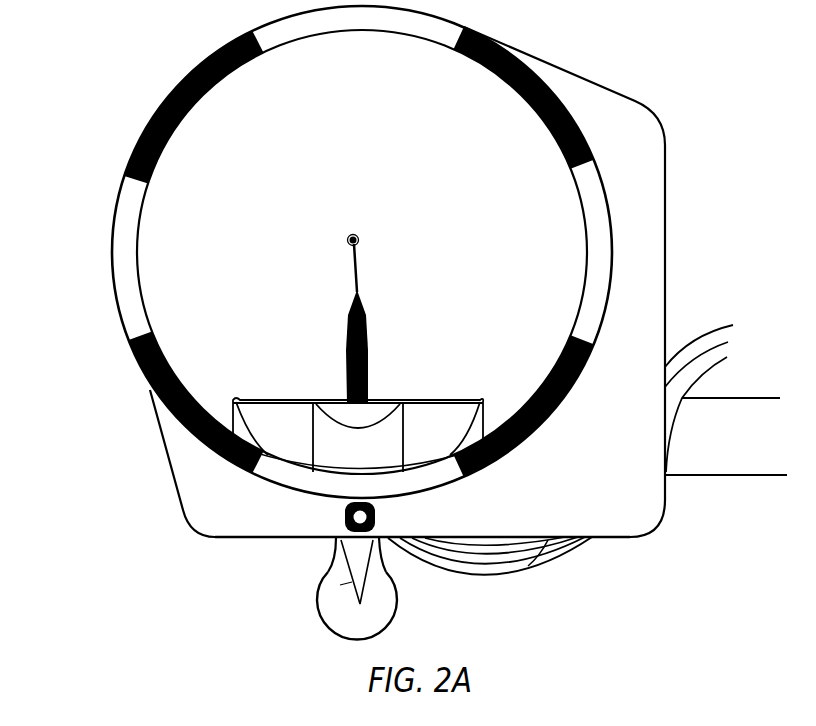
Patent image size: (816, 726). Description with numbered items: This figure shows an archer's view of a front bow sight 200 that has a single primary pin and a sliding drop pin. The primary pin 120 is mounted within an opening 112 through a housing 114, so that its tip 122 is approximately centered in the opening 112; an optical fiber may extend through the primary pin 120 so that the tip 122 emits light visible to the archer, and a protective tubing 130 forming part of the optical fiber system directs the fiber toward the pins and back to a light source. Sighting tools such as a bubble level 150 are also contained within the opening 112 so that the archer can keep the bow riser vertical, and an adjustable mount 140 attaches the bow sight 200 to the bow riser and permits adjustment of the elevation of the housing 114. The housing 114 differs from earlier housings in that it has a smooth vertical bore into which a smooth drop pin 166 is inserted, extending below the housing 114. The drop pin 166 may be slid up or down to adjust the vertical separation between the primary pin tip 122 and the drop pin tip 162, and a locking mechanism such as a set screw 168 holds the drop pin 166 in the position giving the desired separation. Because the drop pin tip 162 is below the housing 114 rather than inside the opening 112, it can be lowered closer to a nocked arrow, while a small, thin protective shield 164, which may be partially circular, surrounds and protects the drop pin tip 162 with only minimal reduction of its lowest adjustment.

The front bow sight 200 is at (140, 48).
The opening 112 is at (283, 186).
The housing 114 is at (621, 447).
The primary pin 120 is at (338, 347).
The tip 122 is at (355, 233).
The protective tubing 130 is at (540, 560).
The adjustable mount 140 is at (743, 447).
The bubble level 150 is at (377, 458).
The drop pin tip 162 is at (358, 606).
The protective shield 164 is at (403, 605).
The drop pin 166 is at (357, 556).
The set screw 168 is at (377, 517).